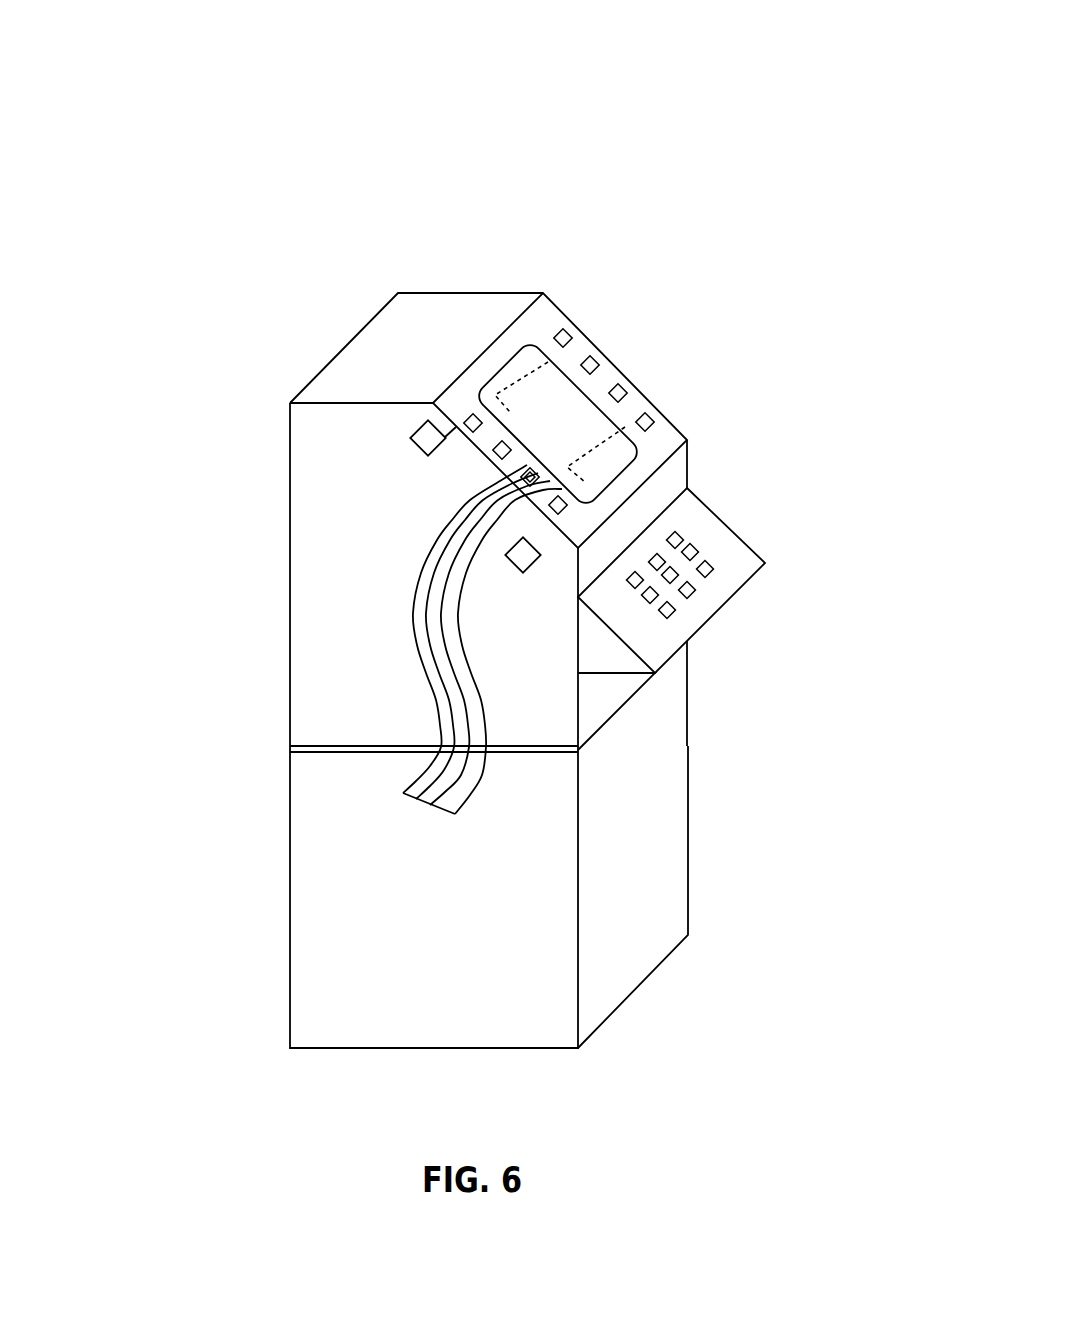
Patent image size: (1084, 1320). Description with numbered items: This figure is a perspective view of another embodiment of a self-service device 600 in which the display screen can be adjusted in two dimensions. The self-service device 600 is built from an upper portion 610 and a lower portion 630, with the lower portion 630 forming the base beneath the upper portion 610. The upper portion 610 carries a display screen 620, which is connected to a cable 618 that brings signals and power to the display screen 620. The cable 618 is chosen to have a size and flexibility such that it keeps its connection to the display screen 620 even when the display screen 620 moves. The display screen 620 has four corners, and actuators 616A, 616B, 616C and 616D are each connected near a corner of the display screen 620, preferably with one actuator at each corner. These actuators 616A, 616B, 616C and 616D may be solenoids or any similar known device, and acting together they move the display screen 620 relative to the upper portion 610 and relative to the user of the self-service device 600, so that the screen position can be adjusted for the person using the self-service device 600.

The self-service device 600 is at (198, 73).
The upper portion 610 is at (363, 326).
The actuator 616A is at (410, 440).
The actuator 616B is at (524, 383).
The actuator 616C is at (602, 445).
The actuator 616D is at (542, 555).
The cable 618 is at (418, 643).
The display screen 620 is at (526, 366).
The lower portion 630 is at (300, 943).